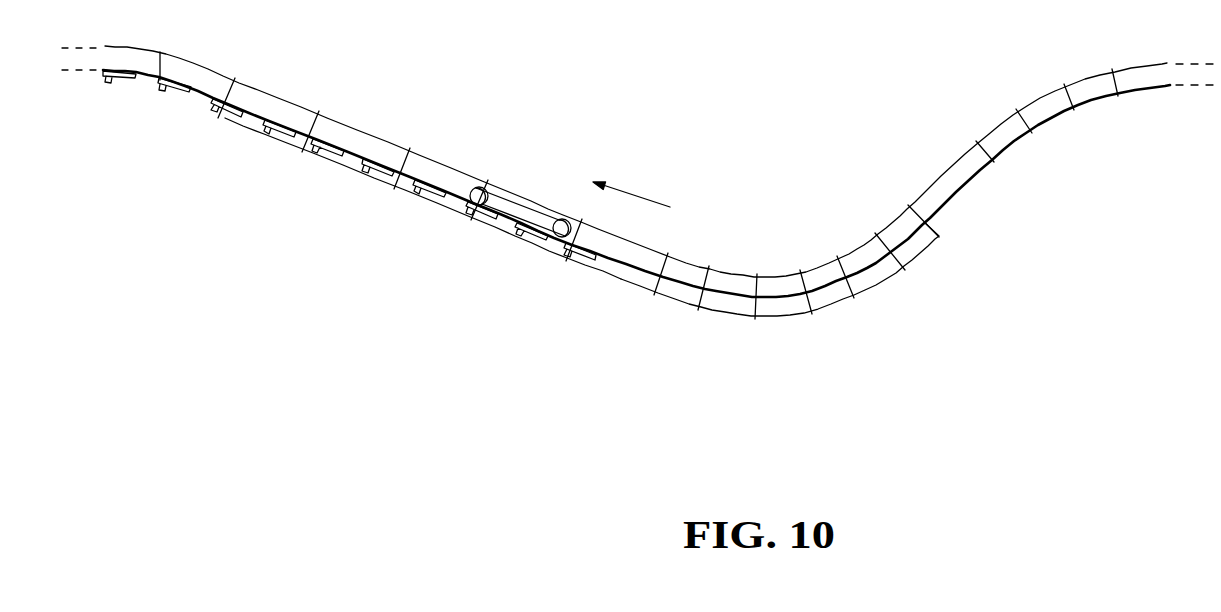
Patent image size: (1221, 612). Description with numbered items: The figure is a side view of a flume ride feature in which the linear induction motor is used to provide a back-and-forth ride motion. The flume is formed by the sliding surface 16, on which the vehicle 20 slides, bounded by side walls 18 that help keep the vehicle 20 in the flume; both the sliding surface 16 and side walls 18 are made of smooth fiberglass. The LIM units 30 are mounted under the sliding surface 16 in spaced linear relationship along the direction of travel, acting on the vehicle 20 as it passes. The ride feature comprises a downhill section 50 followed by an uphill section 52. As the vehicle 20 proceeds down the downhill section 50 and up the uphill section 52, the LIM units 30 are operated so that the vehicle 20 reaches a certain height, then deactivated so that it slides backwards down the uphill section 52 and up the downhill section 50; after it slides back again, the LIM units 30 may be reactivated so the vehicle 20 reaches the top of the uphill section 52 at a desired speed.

The sliding surface 16 is at (681, 283).
The side walls 18 is at (358, 132).
The vehicle 20 is at (521, 204).
The LIM units 30 is at (535, 237).
The downhill section 50 is at (975, 226).
The uphill section 52 is at (330, 191).